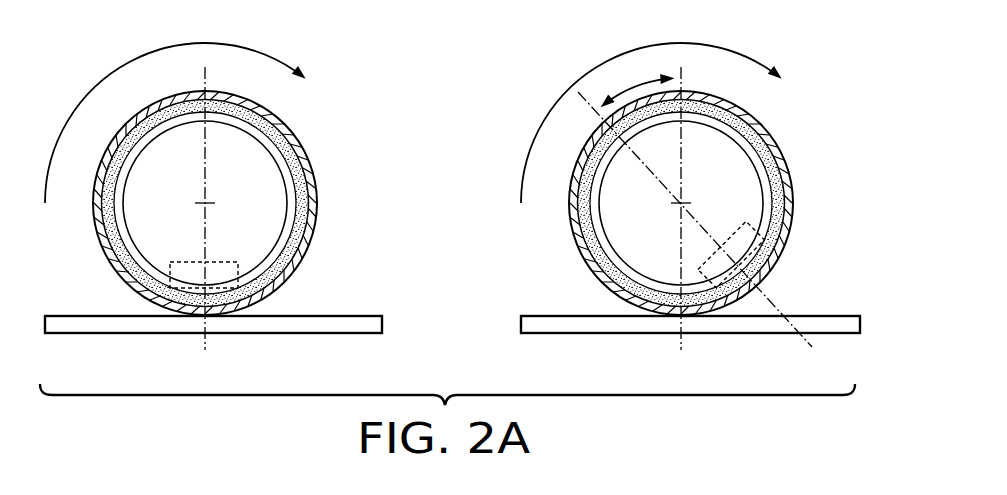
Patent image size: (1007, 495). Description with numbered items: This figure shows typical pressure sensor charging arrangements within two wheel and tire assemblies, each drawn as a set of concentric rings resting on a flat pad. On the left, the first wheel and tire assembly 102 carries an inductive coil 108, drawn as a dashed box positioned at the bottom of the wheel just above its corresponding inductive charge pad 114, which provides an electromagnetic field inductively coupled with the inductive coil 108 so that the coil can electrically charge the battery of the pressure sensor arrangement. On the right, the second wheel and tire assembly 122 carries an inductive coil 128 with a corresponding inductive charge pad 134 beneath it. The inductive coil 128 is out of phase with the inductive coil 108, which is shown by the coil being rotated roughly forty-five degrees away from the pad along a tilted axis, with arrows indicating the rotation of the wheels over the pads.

The first wheel and tire assembly 102 is at (317, 203).
The inductive coil 108 is at (222, 262).
The inductive charge pad 114 is at (311, 316).
The second wheel and tire assembly 122 is at (793, 203).
The inductive coil 128 is at (733, 238).
The inductive charge pad 134 is at (791, 316).